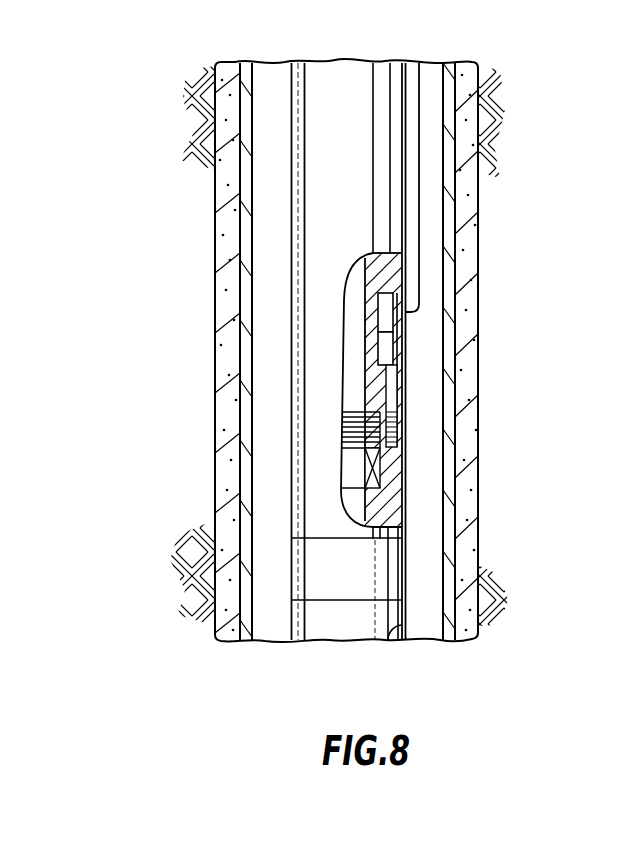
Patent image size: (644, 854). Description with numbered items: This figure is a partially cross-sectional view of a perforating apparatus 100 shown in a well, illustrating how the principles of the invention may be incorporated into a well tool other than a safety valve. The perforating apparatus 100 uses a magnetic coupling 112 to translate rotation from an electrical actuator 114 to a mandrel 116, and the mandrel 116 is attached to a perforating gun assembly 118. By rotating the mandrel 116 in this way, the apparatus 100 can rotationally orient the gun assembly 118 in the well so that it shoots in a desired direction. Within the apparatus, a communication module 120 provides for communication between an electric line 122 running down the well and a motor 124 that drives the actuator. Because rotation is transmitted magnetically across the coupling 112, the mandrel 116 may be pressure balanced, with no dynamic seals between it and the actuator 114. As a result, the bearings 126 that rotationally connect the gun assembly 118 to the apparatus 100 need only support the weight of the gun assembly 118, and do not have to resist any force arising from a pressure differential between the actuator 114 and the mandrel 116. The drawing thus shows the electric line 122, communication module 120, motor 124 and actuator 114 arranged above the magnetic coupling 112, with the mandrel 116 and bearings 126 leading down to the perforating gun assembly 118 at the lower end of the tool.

The perforating apparatus 100 is at (288, 193).
The magnetic coupling 112 is at (416, 425).
The electrical actuator 114 is at (292, 423).
The mandrel 116 is at (397, 507).
The perforating gun assembly 118 is at (405, 610).
The communication module 120 is at (403, 292).
The electric line 122 is at (419, 177).
The motor 124 is at (400, 341).
The bearings 126 is at (380, 460).